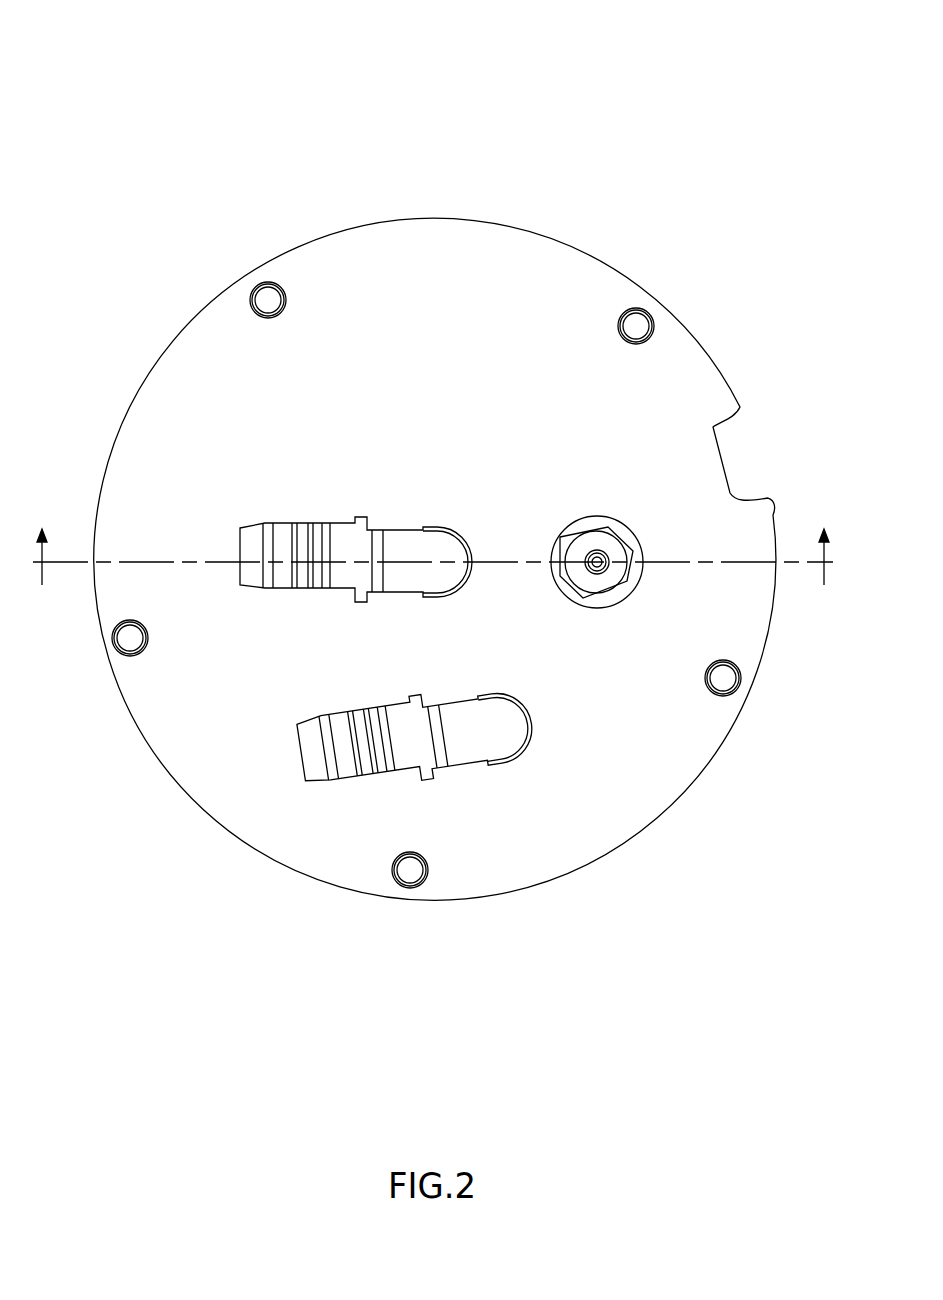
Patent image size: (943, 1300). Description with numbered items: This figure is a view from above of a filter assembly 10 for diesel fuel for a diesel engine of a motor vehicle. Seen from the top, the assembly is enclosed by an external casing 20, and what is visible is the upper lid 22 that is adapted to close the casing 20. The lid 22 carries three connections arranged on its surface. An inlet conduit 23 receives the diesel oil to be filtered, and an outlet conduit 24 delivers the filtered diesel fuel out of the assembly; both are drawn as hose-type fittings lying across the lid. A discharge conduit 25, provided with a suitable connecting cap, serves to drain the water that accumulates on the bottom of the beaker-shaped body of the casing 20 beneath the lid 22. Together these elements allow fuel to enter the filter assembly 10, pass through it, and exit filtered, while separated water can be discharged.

The filter assembly 10 is at (190, 120).
The external casing 20 is at (213, 821).
The upper lid 22 is at (456, 434).
The inlet conduit 23 is at (390, 740).
The outlet conduit 24 is at (363, 517).
The discharge conduit 25 is at (630, 527).